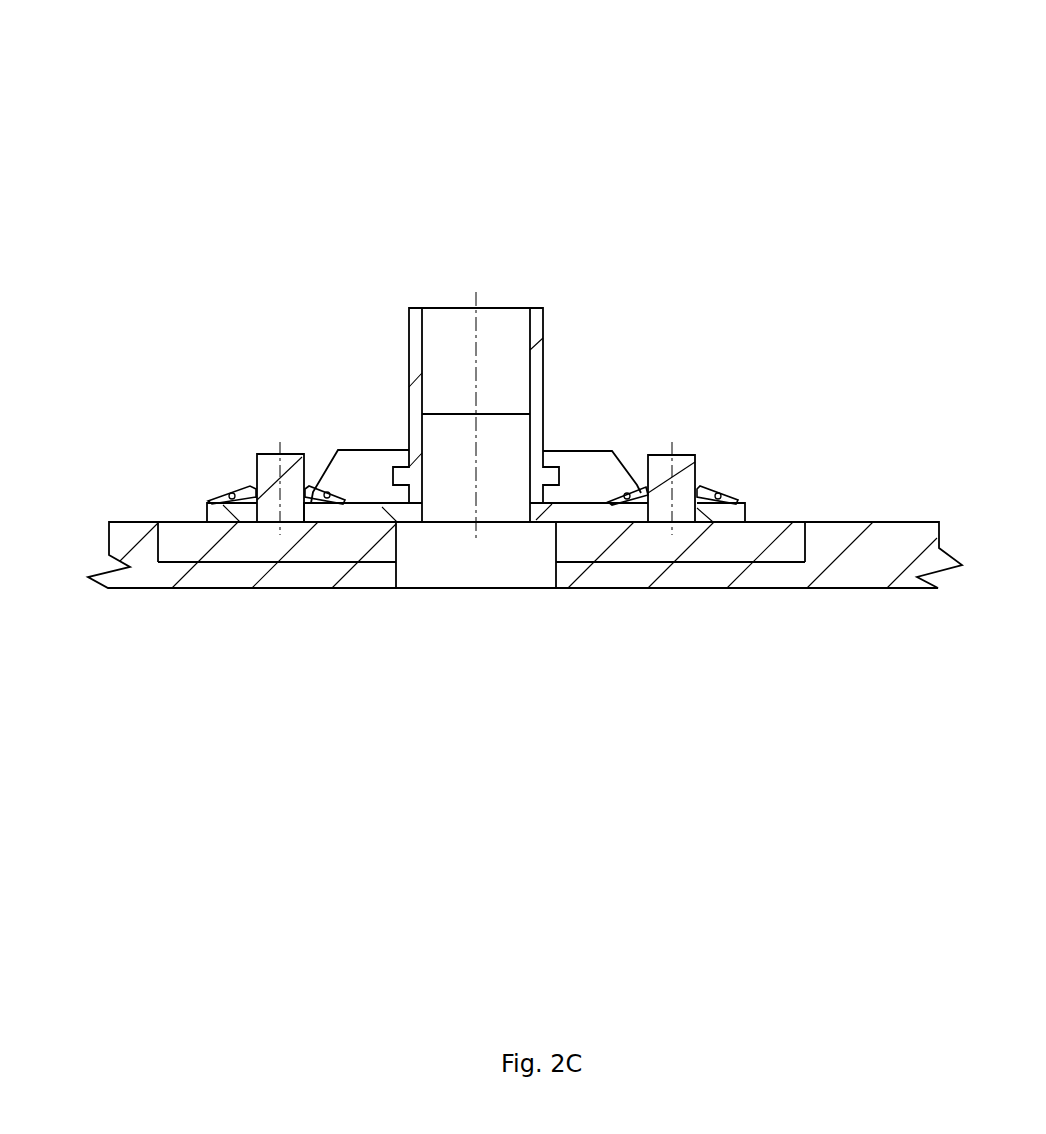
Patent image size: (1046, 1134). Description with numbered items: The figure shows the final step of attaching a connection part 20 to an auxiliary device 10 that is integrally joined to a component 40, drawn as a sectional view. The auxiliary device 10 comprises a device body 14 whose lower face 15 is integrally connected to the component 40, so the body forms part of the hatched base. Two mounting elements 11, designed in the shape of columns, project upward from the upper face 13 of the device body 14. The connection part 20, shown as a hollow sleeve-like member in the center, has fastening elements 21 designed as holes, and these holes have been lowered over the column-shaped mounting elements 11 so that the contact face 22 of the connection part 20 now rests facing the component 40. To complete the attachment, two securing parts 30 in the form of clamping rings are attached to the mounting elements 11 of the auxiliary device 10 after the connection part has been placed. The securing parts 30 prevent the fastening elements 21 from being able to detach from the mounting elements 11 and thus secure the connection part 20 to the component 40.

The auxiliary device 10 is at (173, 500).
The mounting elements 11 is at (676, 468).
The upper face 13 is at (765, 522).
The device body 14 is at (765, 542).
The lower face 15 is at (673, 562).
The connection part 20 is at (555, 327).
The fastening elements 21 is at (297, 500).
The contact face 22 is at (590, 520).
The securing parts 30 is at (715, 478).
The component 40 is at (206, 603).